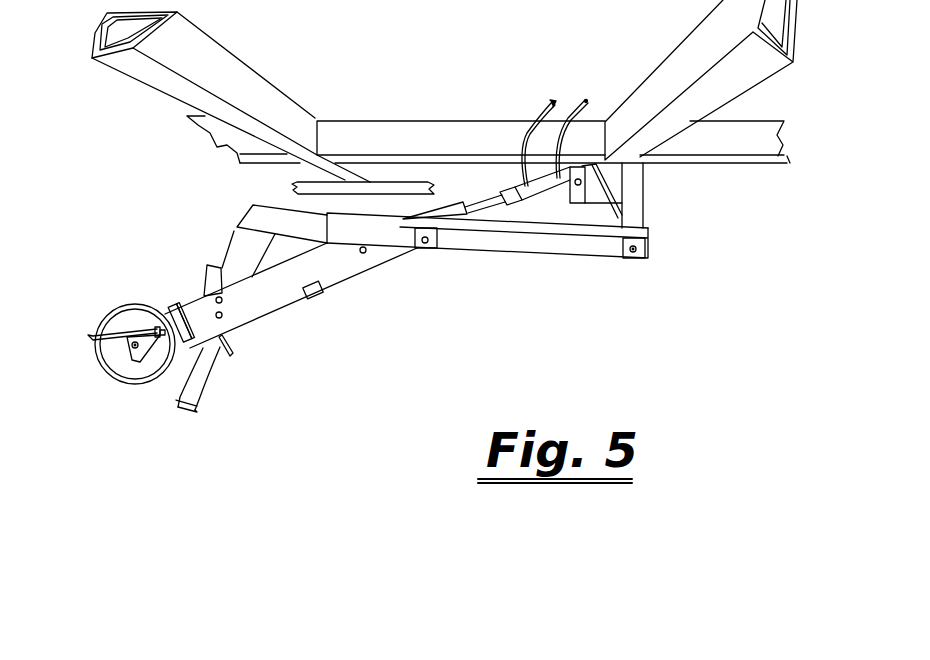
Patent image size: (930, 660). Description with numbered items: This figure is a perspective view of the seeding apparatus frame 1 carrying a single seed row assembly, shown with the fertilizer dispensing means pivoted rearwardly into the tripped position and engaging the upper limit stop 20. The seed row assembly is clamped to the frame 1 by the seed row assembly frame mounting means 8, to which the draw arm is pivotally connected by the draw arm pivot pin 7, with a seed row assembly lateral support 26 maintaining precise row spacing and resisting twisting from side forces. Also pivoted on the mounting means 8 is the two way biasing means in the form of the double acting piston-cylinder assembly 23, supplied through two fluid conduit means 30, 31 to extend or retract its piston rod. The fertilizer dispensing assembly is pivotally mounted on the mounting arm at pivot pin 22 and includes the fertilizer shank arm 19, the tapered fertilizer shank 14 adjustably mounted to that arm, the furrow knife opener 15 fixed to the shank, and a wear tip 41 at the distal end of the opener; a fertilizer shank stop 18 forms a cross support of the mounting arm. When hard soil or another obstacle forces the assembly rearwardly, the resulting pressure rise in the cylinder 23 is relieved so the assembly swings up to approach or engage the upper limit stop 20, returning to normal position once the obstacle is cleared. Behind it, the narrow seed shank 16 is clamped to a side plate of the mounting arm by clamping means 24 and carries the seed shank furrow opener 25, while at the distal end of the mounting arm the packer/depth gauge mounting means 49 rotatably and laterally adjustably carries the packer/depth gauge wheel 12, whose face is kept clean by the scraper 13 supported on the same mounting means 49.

The seeding apparatus frame 1 is at (228, 68).
The draw arm pivot pin 7 is at (642, 260).
The seed row assembly frame mounting means 8 is at (637, 188).
The packer/depth gauge wheel 12 is at (118, 306).
The scraper 13 is at (88, 338).
The fertilizer shank 14 is at (245, 259).
The furrow knife opener 15 is at (222, 327).
The seed shank 16 is at (185, 380).
The fertilizer shank stop 18 is at (312, 295).
The fertilizer shank arm 19 is at (255, 220).
The upper limit stop 20 is at (312, 215).
The pivot pin 22 is at (365, 253).
The piston-cylinder assembly 23 is at (538, 190).
The clamp 24 is at (173, 307).
The seed shank furrow opener 25 is at (205, 393).
The seed row assembly lateral support 26 is at (567, 250).
The fluid conduit means 30 is at (566, 108).
The fluid conduit means 31 is at (537, 110).
The wear tip 41 is at (233, 360).
The packer/depth gauge mounting means 49 is at (137, 358).